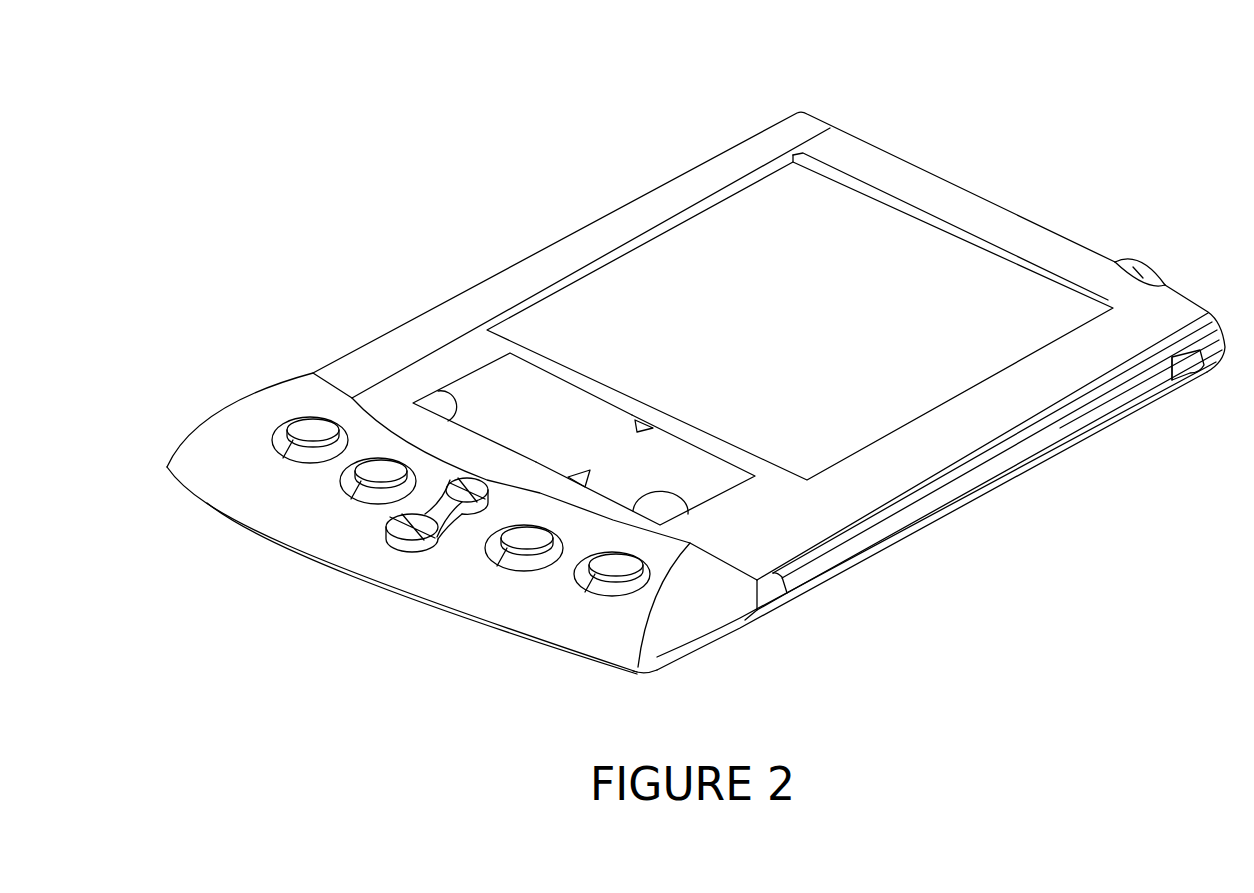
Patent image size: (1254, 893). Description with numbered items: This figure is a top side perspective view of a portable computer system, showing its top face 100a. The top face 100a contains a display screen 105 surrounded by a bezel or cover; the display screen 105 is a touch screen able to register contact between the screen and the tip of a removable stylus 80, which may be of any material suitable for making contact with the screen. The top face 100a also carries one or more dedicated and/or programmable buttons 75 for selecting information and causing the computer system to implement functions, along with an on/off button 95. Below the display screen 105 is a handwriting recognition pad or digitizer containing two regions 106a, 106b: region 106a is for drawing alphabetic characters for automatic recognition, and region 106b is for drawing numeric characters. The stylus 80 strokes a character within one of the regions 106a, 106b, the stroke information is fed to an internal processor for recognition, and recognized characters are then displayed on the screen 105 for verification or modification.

The top face 100a is at (190, 81).
The display screen 105 is at (855, 261).
The region for alphabetic characters 106a is at (543, 421).
The region for numeric characters 106b is at (685, 489).
The buttons 75 is at (307, 420).
The on/off button 95 is at (1130, 262).
The removable stylus 80 is at (1100, 402).